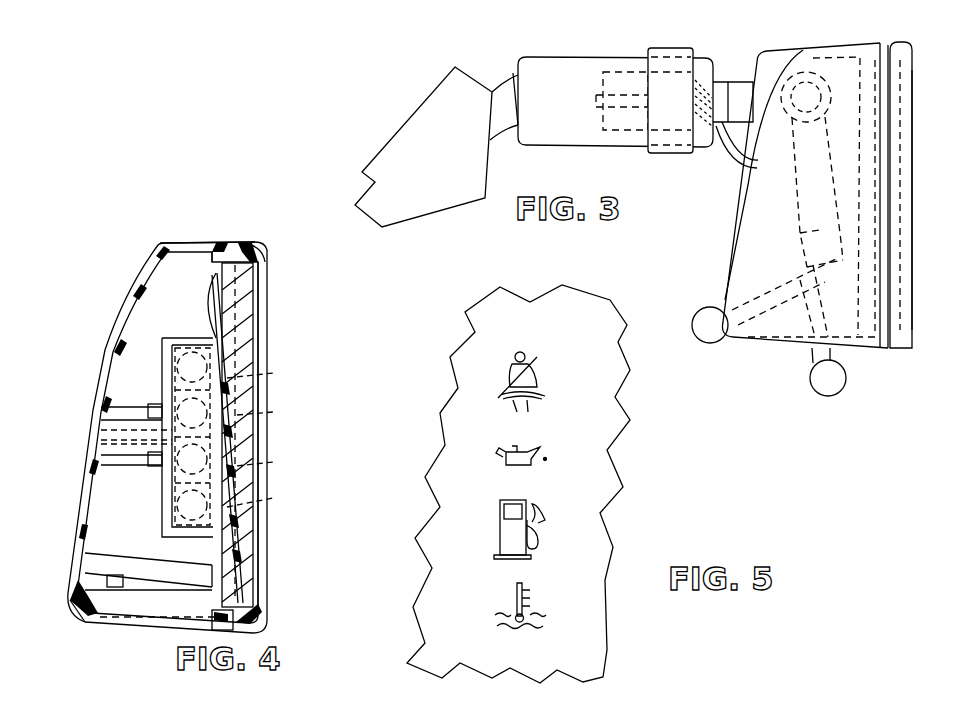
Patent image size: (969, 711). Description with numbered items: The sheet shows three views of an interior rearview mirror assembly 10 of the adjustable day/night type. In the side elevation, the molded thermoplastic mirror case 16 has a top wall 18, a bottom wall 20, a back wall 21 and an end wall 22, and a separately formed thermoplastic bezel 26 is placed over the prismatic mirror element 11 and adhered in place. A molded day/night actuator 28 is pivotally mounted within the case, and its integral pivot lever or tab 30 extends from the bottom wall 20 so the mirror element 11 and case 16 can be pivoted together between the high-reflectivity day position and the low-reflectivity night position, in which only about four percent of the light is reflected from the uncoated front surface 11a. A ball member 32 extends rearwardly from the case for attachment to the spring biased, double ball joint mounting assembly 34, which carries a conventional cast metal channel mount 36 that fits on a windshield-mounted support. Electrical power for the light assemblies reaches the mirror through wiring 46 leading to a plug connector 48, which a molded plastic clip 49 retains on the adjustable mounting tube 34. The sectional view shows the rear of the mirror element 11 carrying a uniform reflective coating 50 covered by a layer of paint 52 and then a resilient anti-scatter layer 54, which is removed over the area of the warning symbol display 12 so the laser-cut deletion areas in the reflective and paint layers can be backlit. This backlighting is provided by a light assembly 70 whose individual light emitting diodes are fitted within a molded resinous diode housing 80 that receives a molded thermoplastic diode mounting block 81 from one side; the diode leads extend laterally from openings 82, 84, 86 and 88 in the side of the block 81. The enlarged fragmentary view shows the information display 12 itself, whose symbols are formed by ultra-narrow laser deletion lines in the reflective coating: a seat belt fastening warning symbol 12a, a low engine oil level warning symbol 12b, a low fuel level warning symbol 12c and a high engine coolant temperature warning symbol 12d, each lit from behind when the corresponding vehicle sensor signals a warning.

In FIG. 3, the interior rearview mirror assembly 10 is at (811, 198).
In FIG. 3, the prismatic mirror element 11 is at (903, 107).
In FIG. 4, the prismatic mirror element 11 is at (252, 290).
In FIG. 4, the uncoated front surface 11a is at (270, 335).
In FIG. 5, the information display 12 is at (542, 318).
In FIG. 5, the seat belt fastening warning symbol 12a is at (533, 378).
In FIG. 5, the low engine oil level warning symbol 12b is at (535, 452).
In FIG. 5, the low fuel level warning symbol 12c is at (547, 518).
In FIG. 5, the high engine coolant temperature warning symbol 12d is at (528, 595).
In FIG. 3, the mirror case 16 is at (742, 203).
In FIG. 4, the mirror case 16 is at (128, 303).
In FIG. 3, the top wall 18 is at (843, 46).
In FIG. 4, the top wall 18 is at (215, 242).
In FIG. 3, the bottom wall 20 is at (750, 348).
In FIG. 4, the bottom wall 20 is at (88, 618).
In FIG. 4, the back wall 21 is at (103, 443).
In FIG. 3, the end wall 22 is at (766, 208).
In FIG. 3, the bezel 26 is at (905, 45).
In FIG. 4, the bezel 26 is at (260, 250).
In FIG. 3, the day/night actuator 28 is at (722, 265).
In FIG. 3, the pivot lever or tab 30 is at (848, 381).
In FIG. 3, the ball member 32 is at (740, 82).
In FIG. 3, the double ball joint mounting assembly 34 is at (594, 66).
In FIG. 3, the channel mount 36 is at (482, 82).
In FIG. 3, the wiring 46 is at (748, 161).
In FIG. 3, the plug connector 48 is at (605, 133).
In FIG. 3, the clip 49 is at (684, 41).
In FIG. 4, the reflective coating 50 is at (233, 573).
In FIG. 4, the paint layer 52 is at (233, 583).
In FIG. 4, the anti-scatter layer 54 is at (213, 284).
In FIG. 4, the light assembly 70 is at (143, 418).
In FIG. 4, the diode housing 80 is at (163, 337).
In FIG. 4, the diode mounting block 81 is at (172, 483).
In FIG. 4, the opening 82 is at (263, 367).
In FIG. 4, the opening 84 is at (268, 411).
In FIG. 4, the opening 86 is at (263, 456).
In FIG. 4, the opening 88 is at (263, 497).